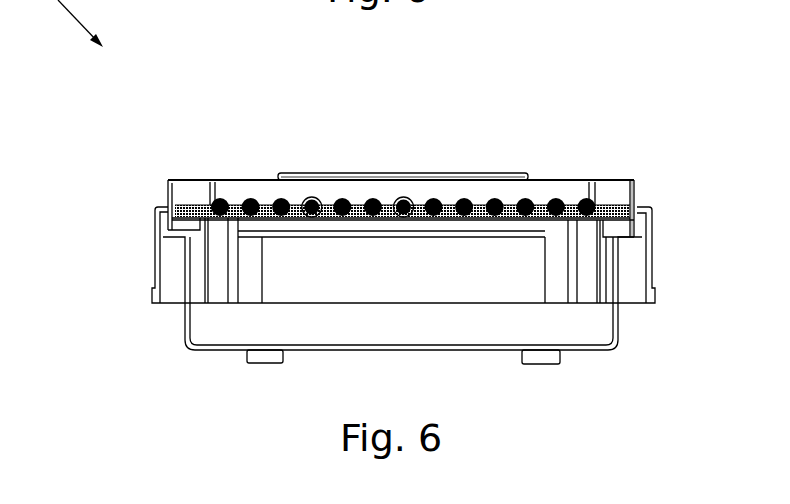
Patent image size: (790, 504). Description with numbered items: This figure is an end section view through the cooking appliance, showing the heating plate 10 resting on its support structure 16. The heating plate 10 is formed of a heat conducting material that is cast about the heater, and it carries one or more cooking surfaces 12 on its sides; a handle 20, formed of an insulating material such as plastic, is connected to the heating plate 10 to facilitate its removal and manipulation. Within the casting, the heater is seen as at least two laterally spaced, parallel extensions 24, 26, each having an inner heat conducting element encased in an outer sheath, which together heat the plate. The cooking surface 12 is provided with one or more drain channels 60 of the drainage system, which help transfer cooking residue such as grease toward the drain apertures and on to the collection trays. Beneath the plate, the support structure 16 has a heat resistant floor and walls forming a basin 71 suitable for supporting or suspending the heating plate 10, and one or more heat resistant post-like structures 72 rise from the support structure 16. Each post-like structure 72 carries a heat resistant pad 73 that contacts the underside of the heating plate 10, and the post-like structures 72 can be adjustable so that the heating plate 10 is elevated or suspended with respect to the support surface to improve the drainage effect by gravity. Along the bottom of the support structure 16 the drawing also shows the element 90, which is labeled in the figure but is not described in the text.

The heating plate 10 is at (637, 198).
The cooking surface 12 is at (183, 207).
The support structure 16 is at (652, 275).
The handle 20 is at (477, 175).
The extension 24 is at (507, 200).
The extension 26 is at (306, 199).
The drain channel 60 is at (403, 199).
The basin 71 is at (250, 325).
The post-like structure 72 is at (217, 258).
The heat resistant pad 73 is at (205, 206).
The feet 90 is at (560, 363).